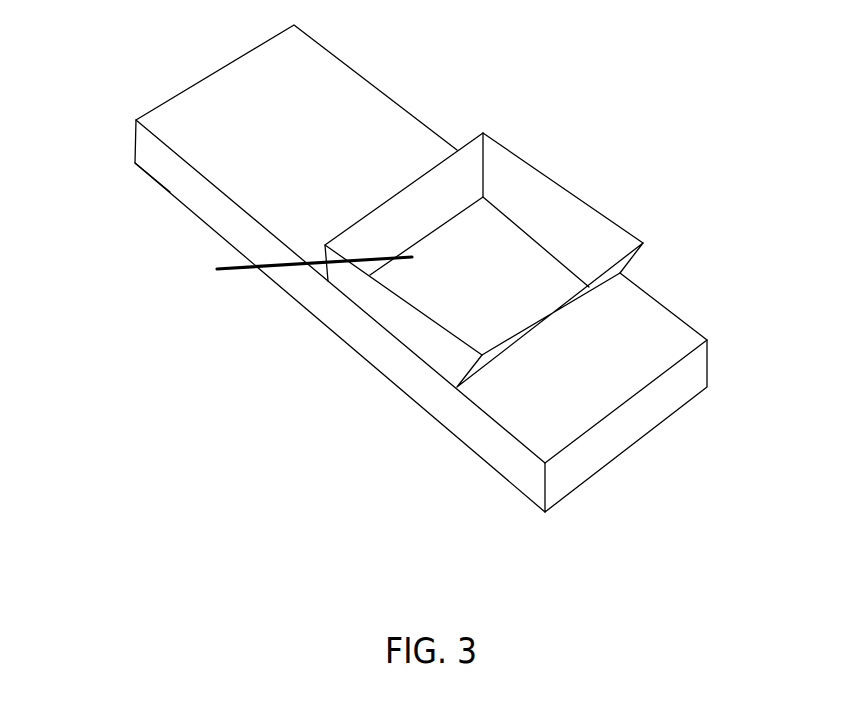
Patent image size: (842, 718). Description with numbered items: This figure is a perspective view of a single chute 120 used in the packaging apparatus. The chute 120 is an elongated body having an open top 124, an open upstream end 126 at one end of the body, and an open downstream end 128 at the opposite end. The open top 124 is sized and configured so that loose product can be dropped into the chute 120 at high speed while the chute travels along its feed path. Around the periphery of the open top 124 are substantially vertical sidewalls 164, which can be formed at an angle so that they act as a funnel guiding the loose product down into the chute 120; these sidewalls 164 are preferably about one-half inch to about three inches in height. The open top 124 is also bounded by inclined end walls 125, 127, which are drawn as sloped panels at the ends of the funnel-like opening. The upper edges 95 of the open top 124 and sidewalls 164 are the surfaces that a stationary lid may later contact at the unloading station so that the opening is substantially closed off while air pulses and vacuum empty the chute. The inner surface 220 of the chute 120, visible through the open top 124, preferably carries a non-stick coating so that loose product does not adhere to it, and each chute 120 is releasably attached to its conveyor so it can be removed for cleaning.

The chute 120 is at (408, 112).
The open downstream end 128 is at (132, 133).
The open upstream end 126 is at (635, 406).
The upper edges 95 is at (580, 197).
The inclined end wall 127 is at (475, 230).
The sidewalls 164 is at (597, 228).
The inclined end wall 125 is at (621, 276).
The inner surface 220 is at (433, 293).
The open top 124 is at (294, 269).